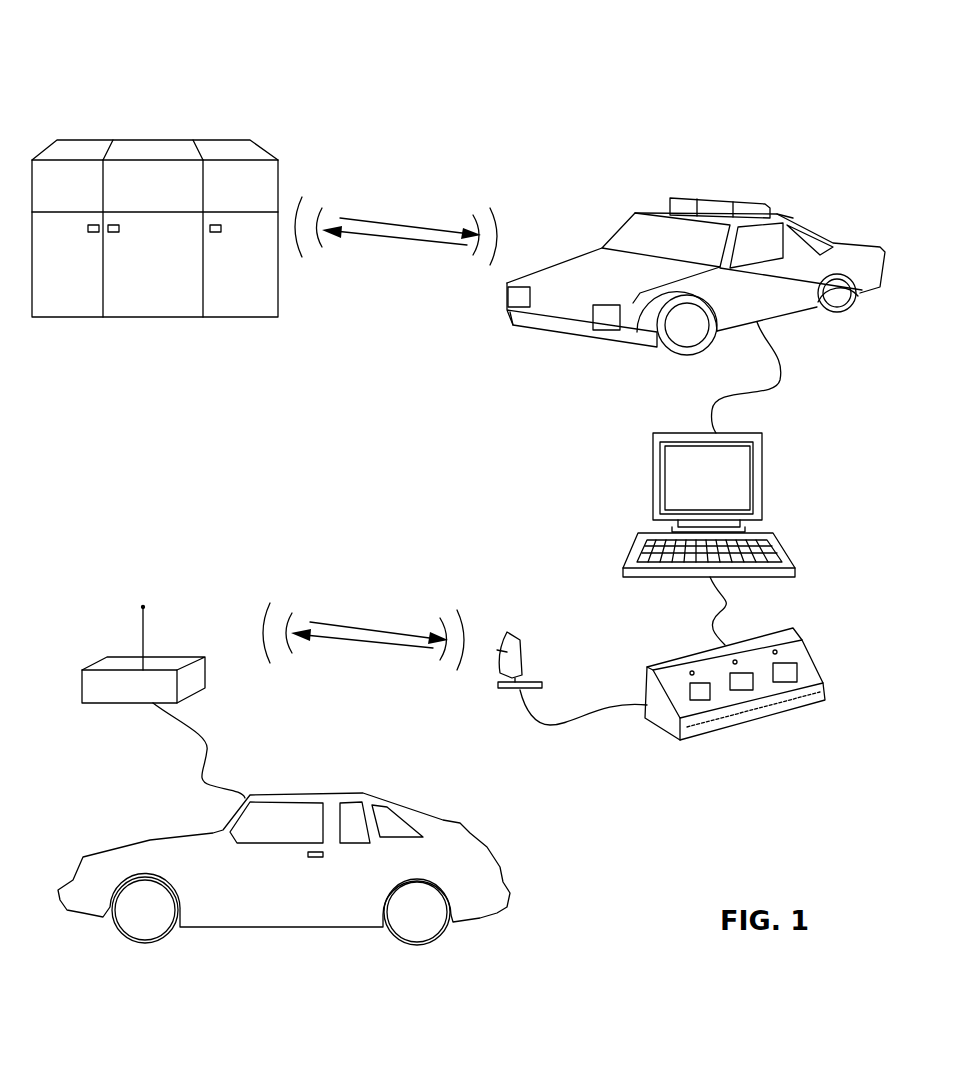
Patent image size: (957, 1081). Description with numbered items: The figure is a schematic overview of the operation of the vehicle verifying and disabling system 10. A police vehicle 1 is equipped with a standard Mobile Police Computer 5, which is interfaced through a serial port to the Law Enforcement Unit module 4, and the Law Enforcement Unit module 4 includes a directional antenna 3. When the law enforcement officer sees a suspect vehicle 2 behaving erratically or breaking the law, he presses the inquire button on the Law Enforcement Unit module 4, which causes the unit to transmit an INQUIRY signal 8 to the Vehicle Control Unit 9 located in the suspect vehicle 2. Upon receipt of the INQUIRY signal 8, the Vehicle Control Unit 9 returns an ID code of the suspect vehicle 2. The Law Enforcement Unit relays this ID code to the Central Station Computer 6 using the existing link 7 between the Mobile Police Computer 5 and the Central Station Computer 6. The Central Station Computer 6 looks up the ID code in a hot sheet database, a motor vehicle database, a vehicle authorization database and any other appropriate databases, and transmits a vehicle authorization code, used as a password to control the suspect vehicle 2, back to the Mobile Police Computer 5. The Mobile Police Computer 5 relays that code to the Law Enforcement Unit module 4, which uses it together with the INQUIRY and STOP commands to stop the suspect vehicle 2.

The vehicle verifying and disabling system 10 is at (446, 80).
The police vehicle 1 is at (757, 197).
The suspect vehicle 2 is at (478, 848).
The directional antenna 3 is at (538, 657).
The Law Enforcement Unit module 4 is at (745, 718).
The Mobile Police Computer 5 is at (765, 483).
The Central Station Computer 6 is at (173, 313).
The link 7 is at (418, 228).
The INQUIRY signal 8 is at (385, 630).
The Vehicle Control Unit 9 is at (200, 678).